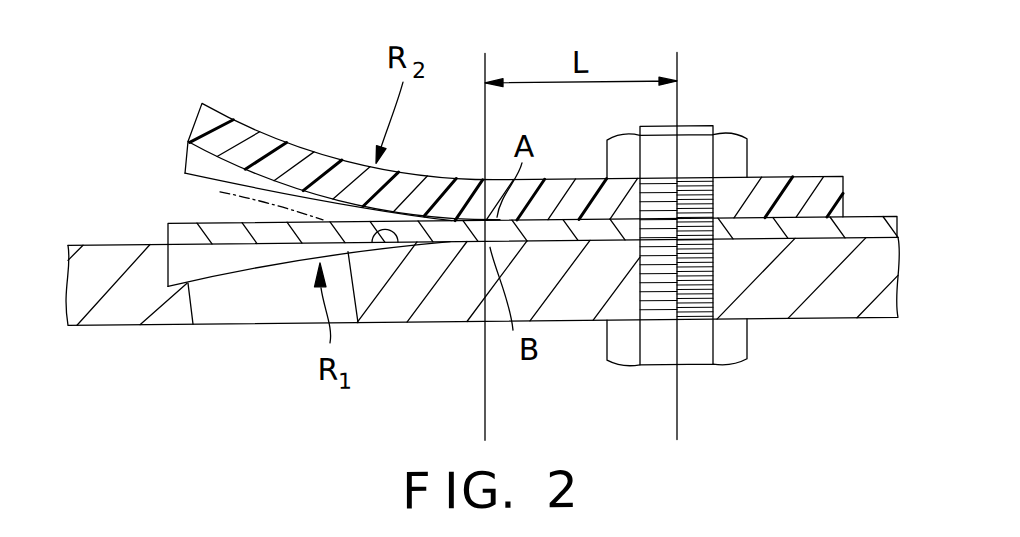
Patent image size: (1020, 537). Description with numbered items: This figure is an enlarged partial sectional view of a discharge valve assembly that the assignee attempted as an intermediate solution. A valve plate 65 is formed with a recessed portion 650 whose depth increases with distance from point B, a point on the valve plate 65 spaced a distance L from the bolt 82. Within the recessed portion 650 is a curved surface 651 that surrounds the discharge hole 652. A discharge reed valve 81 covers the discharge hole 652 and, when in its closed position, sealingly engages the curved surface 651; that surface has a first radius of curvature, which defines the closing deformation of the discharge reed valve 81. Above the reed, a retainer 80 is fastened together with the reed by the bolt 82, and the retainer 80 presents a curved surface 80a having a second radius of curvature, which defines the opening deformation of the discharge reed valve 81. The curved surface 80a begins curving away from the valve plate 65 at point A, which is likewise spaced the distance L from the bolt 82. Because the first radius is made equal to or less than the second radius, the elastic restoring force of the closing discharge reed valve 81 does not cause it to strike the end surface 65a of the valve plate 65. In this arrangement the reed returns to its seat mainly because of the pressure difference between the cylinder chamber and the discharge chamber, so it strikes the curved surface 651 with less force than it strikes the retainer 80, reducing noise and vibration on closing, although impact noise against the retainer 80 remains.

The valve plate 65 is at (798, 286).
The end surface of valve plate 65a is at (98, 244).
The recessed portion 650 is at (173, 264).
The curved surface 651 is at (402, 254).
The discharge hole 652 is at (250, 302).
The retainer 80 is at (297, 170).
The curved surface of retainer 80a is at (257, 182).
The discharge reed valve 81 is at (405, 224).
The bolt 82 is at (702, 160).